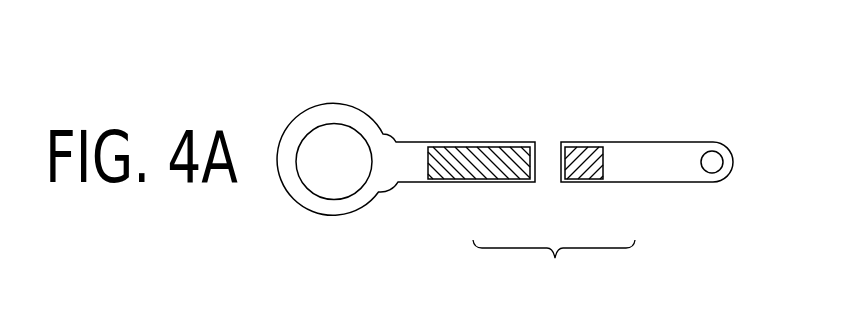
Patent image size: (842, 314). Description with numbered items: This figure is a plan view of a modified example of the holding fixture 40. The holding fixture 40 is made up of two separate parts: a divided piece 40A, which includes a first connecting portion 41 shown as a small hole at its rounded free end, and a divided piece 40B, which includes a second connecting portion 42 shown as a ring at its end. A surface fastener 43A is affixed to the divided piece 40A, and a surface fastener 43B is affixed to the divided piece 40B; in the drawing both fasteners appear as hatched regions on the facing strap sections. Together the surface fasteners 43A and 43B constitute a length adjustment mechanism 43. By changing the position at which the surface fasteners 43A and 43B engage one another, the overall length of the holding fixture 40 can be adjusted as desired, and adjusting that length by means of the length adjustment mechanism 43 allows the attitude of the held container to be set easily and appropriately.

The holding fixture 40 is at (400, 141).
The divided piece 40A is at (640, 152).
The divided piece 40B is at (421, 146).
The first connecting portion 41 is at (727, 148).
The second connecting portion 42 is at (310, 120).
The length adjustment mechanism 43 is at (554, 267).
The surface fastener 43A is at (585, 172).
The surface fastener 43B is at (505, 173).